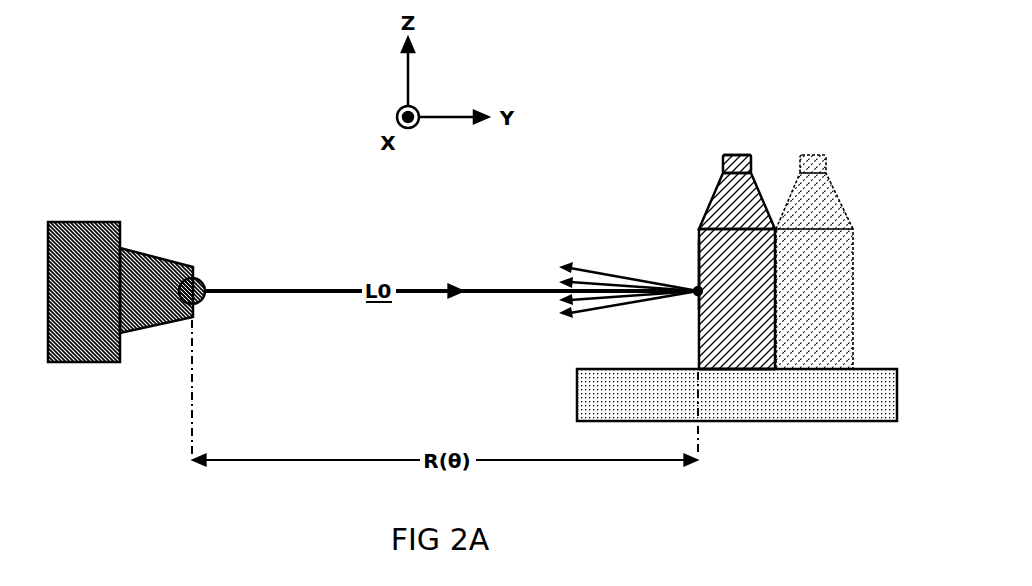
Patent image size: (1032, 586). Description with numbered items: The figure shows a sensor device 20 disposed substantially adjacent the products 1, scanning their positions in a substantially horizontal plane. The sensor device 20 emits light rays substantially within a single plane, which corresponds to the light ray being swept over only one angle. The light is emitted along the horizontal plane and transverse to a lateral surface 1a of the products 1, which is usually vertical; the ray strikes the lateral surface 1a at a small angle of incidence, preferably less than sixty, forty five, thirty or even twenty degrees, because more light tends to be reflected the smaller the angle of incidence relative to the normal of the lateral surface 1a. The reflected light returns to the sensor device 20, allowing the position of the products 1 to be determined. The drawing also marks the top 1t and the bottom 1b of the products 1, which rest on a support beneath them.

The sensor device 20 is at (132, 302).
The products 1 is at (745, 303).
The lateral surface 1a is at (662, 269).
The top of object 1t is at (737, 143).
The bottom of object 1b is at (737, 382).